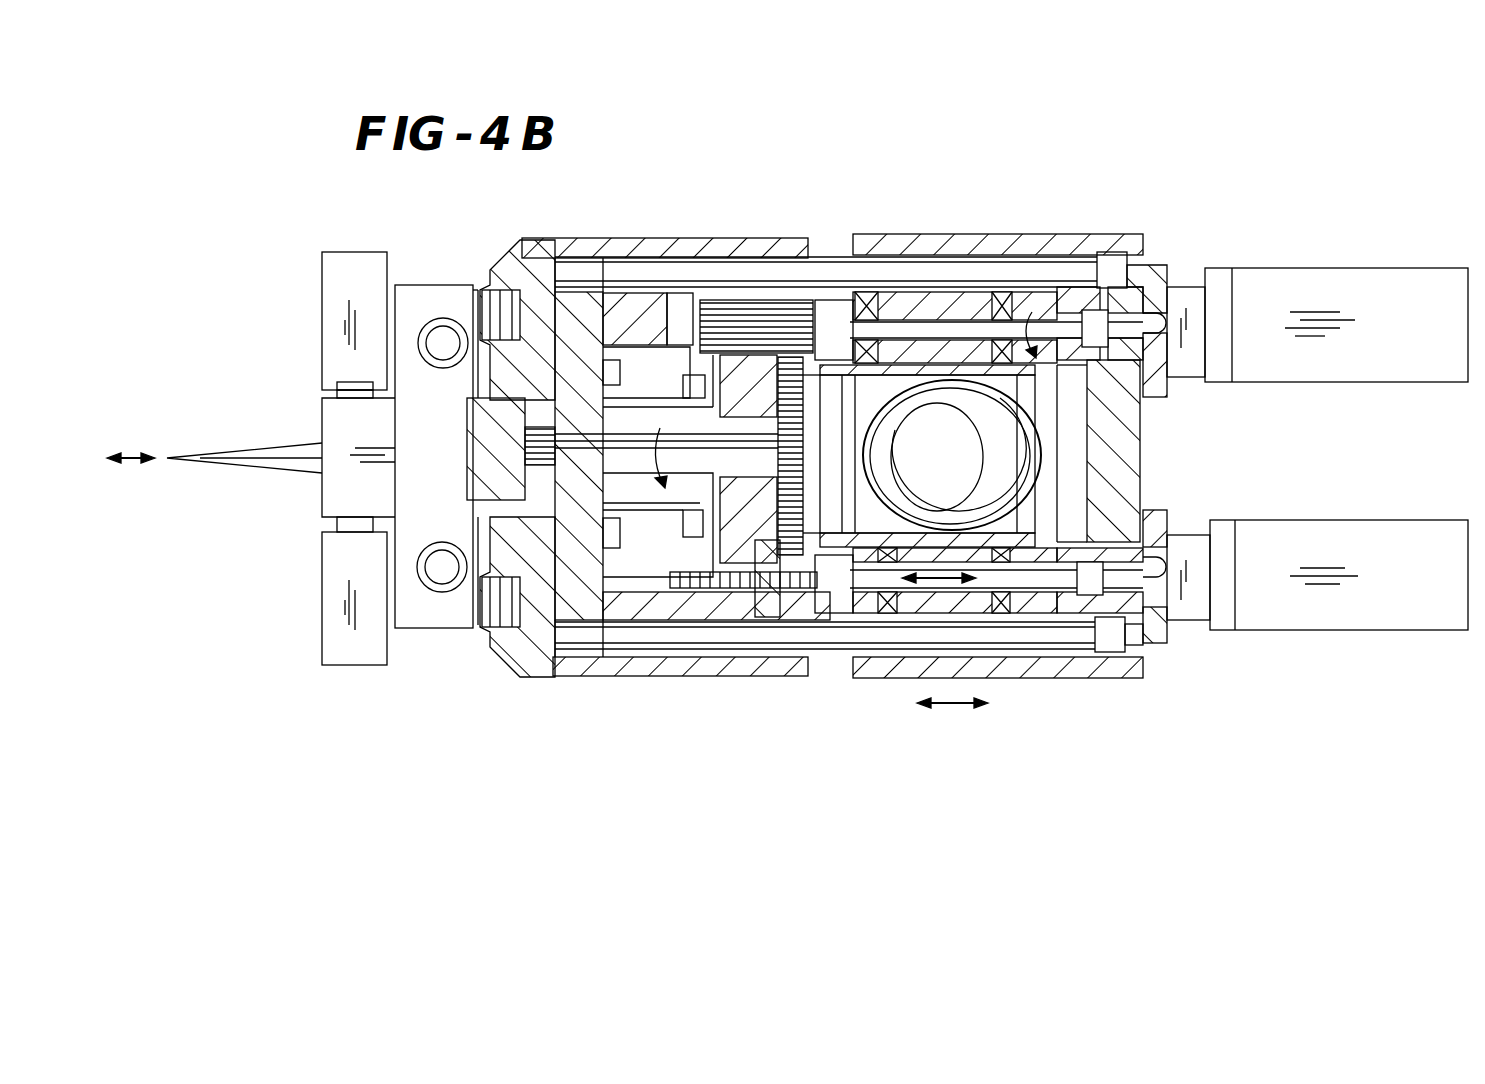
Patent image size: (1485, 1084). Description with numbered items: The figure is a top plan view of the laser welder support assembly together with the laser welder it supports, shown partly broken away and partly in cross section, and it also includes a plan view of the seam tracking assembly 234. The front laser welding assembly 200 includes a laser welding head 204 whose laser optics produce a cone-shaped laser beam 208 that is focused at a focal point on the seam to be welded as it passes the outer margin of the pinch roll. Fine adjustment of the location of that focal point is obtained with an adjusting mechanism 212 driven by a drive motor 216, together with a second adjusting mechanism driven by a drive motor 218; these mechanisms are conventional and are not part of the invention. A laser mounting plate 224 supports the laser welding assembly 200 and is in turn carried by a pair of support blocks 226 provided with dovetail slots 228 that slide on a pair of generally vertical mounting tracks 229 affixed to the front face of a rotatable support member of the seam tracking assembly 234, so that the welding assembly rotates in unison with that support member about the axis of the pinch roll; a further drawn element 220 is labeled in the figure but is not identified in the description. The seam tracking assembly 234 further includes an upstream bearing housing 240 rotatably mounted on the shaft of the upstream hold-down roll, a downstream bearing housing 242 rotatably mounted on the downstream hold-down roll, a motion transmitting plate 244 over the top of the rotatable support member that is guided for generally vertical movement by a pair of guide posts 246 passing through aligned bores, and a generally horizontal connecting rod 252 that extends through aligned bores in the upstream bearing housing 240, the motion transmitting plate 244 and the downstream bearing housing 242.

The front laser welding assembly 200 is at (906, 178).
The laser welding head 204 is at (1016, 230).
The laser beam 208 is at (263, 462).
The adjusting mechanism 212 is at (765, 290).
The drive motor 216 is at (1313, 268).
The drive motor 218 is at (1325, 630).
The drive shaft 220 is at (482, 428).
The laser mounting plate 224 is at (610, 238).
The support blocks 226 is at (552, 242).
The dovetail slots 228 is at (499, 250).
The mounting tracks 229 is at (497, 292).
The seam tracking assembly 234 is at (290, 278).
The upstream bearing housing 240 is at (330, 262).
The downstream bearing housing 242 is at (330, 572).
The motion transmitting plate 244 is at (412, 282).
The guide posts 246 is at (433, 343).
The connecting rod 252 is at (347, 388).